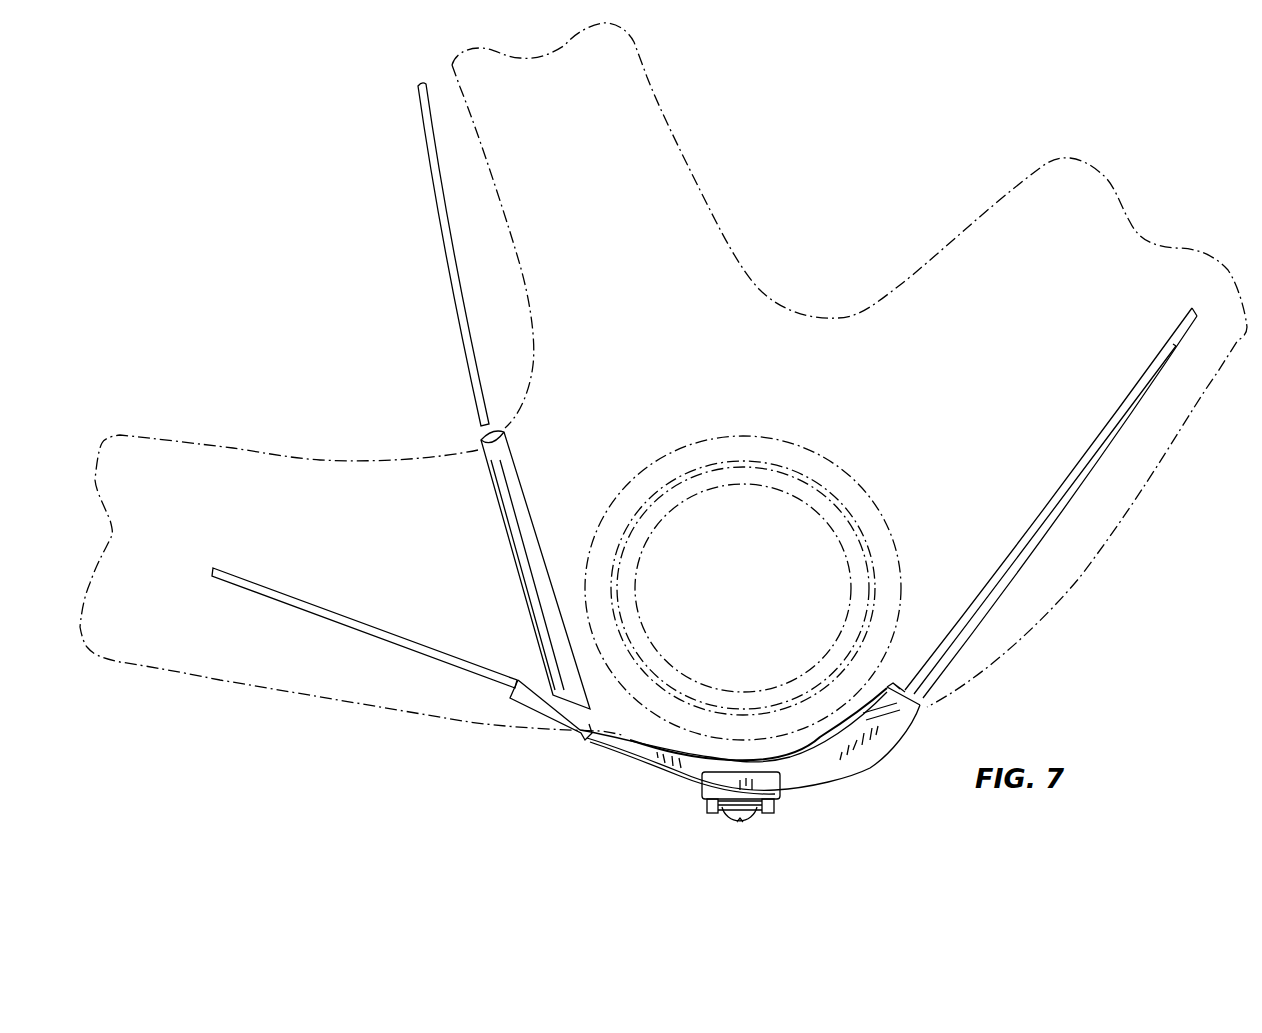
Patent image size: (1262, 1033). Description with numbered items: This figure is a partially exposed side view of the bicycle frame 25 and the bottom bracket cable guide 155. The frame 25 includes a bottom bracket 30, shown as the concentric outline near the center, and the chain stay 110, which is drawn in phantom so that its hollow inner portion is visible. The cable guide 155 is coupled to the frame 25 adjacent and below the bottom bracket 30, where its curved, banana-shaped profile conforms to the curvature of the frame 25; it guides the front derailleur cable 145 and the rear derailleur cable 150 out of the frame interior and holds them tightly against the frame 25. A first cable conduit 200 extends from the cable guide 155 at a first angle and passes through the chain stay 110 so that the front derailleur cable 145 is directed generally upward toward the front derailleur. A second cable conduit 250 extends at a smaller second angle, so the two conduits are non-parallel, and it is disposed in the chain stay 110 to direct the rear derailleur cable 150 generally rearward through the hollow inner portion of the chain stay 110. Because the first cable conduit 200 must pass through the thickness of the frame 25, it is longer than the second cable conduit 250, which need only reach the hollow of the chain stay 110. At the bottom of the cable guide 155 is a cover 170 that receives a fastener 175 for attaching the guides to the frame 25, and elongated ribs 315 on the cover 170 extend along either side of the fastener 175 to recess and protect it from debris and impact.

The frame 25 is at (838, 318).
The bottom bracket 30 is at (803, 498).
The chain stay 110 is at (235, 447).
The front derailleur cable 145 is at (430, 135).
The rear derailleur cable 150 is at (350, 623).
The cable guide 155 is at (822, 768).
The cover 170 is at (713, 790).
The fastener 175 is at (748, 816).
The first cable conduit 200 is at (507, 455).
The second cable conduit 250 is at (530, 700).
The elongated ribs 315 is at (772, 813).